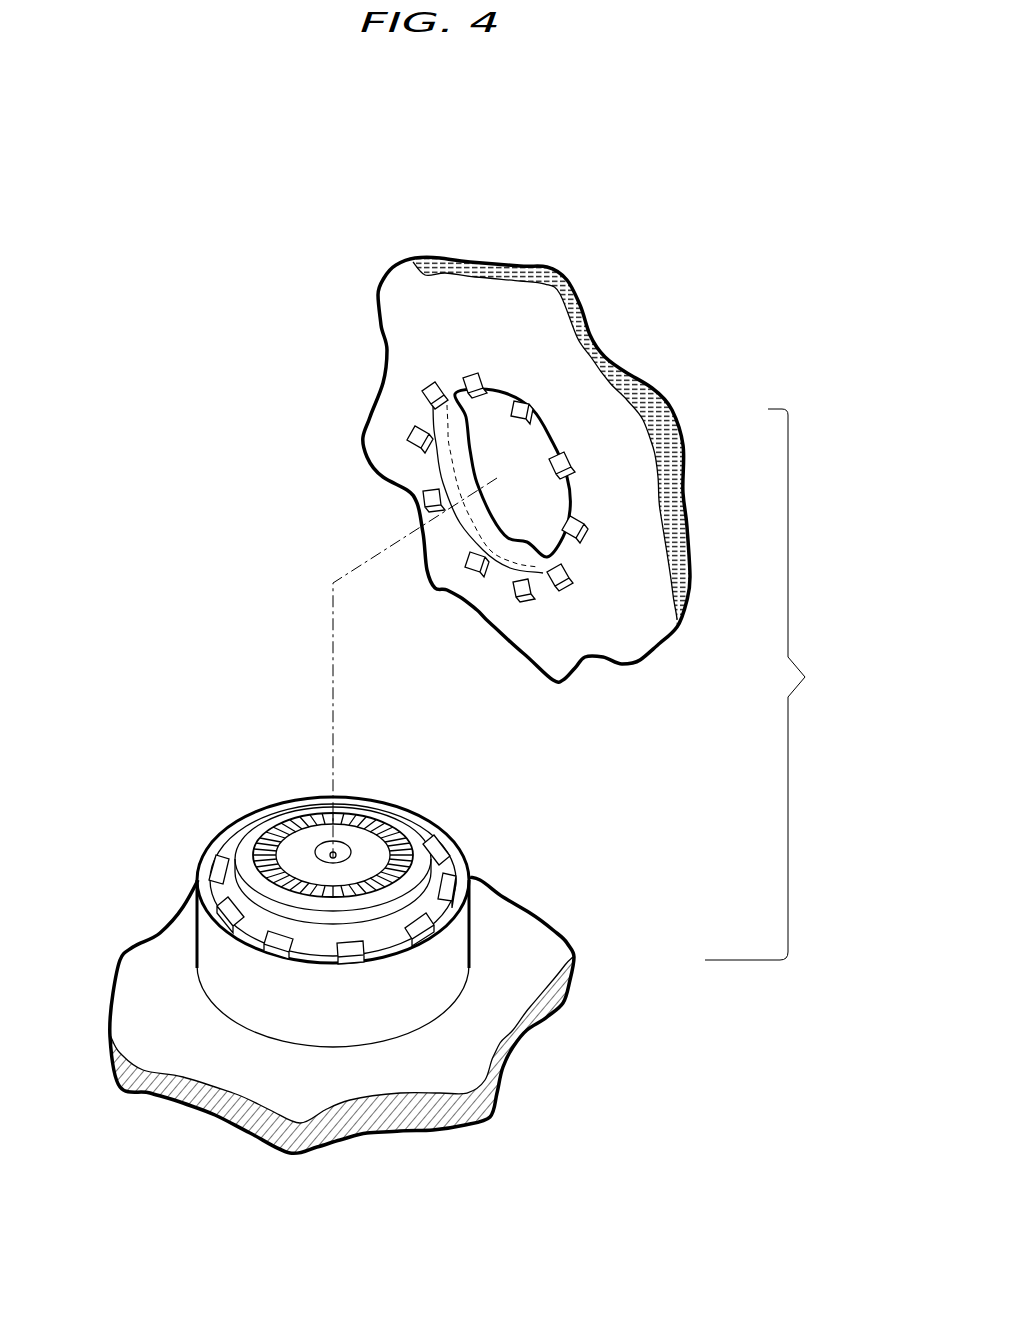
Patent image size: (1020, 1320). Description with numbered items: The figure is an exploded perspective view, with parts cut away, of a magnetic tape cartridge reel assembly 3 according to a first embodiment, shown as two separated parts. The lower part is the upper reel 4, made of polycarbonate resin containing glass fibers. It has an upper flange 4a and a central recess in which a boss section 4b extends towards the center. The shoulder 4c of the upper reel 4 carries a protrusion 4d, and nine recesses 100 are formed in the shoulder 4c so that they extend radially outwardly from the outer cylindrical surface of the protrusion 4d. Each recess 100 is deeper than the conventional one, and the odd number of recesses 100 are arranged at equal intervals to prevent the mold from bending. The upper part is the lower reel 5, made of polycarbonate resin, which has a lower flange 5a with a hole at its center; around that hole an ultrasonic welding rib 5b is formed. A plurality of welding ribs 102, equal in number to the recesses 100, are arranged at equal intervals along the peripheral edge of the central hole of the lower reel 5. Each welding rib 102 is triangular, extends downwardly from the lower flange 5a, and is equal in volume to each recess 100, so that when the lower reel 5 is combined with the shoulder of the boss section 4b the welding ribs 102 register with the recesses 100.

The rotary damper 3 is at (782, 684).
The upper reel 4 is at (566, 954).
The upper flange 4a is at (475, 1042).
The boss section 4b is at (472, 942).
The shoulder 4c is at (408, 812).
The protrusion 4d is at (302, 835).
The lower reel 5 is at (686, 414).
The lower flange 5a is at (593, 352).
The ultrasonic welding rib 5b is at (467, 469).
The recesses 100 is at (225, 867).
The welding ribs 102 is at (410, 440).